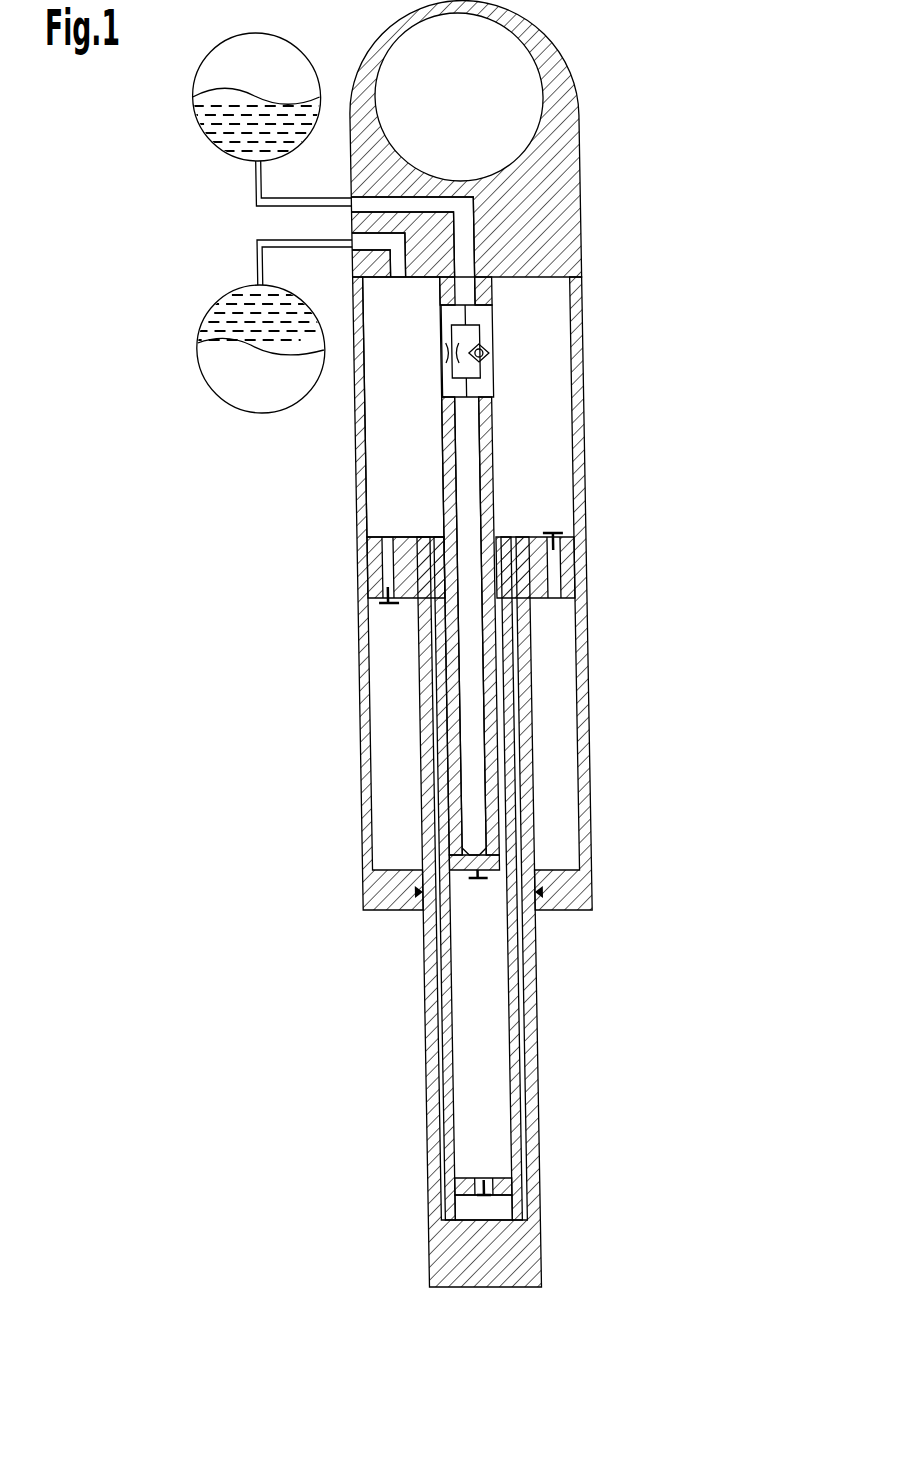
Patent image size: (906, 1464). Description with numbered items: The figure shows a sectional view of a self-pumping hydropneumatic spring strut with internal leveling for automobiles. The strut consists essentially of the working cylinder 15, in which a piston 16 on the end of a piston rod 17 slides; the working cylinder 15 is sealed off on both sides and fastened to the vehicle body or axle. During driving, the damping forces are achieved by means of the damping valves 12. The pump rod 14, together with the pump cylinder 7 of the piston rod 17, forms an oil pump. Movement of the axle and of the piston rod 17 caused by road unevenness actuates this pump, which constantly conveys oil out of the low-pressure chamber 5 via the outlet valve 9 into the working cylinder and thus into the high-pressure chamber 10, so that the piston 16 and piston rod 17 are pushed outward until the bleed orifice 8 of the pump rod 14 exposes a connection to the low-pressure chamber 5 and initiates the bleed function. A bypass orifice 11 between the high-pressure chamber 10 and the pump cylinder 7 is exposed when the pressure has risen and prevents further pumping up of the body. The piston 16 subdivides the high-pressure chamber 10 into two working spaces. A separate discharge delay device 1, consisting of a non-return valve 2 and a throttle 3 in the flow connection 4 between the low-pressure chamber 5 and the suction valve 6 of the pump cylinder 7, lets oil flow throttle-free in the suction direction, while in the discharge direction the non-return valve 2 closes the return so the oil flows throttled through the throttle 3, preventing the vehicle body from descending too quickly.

The discharge delay device 1 is at (503, 336).
The non-return valve 2 is at (486, 355).
The throttle 3 is at (440, 365).
The flow connection 4 is at (468, 218).
The low-pressure chamber 5 is at (213, 143).
The suction valve 6 is at (490, 866).
The pump cylinder 7 is at (492, 1027).
The bleed orifice 8 is at (453, 641).
The outlet valve 9 is at (480, 1200).
The high-pressure chamber 10 is at (225, 297).
The bypass orifice 11 is at (478, 556).
The damping valves 12 is at (378, 598).
The pump rod 14 is at (450, 428).
The working cylinder 15 is at (363, 813).
The piston 16 is at (457, 560).
The piston rod 17 is at (418, 1038).